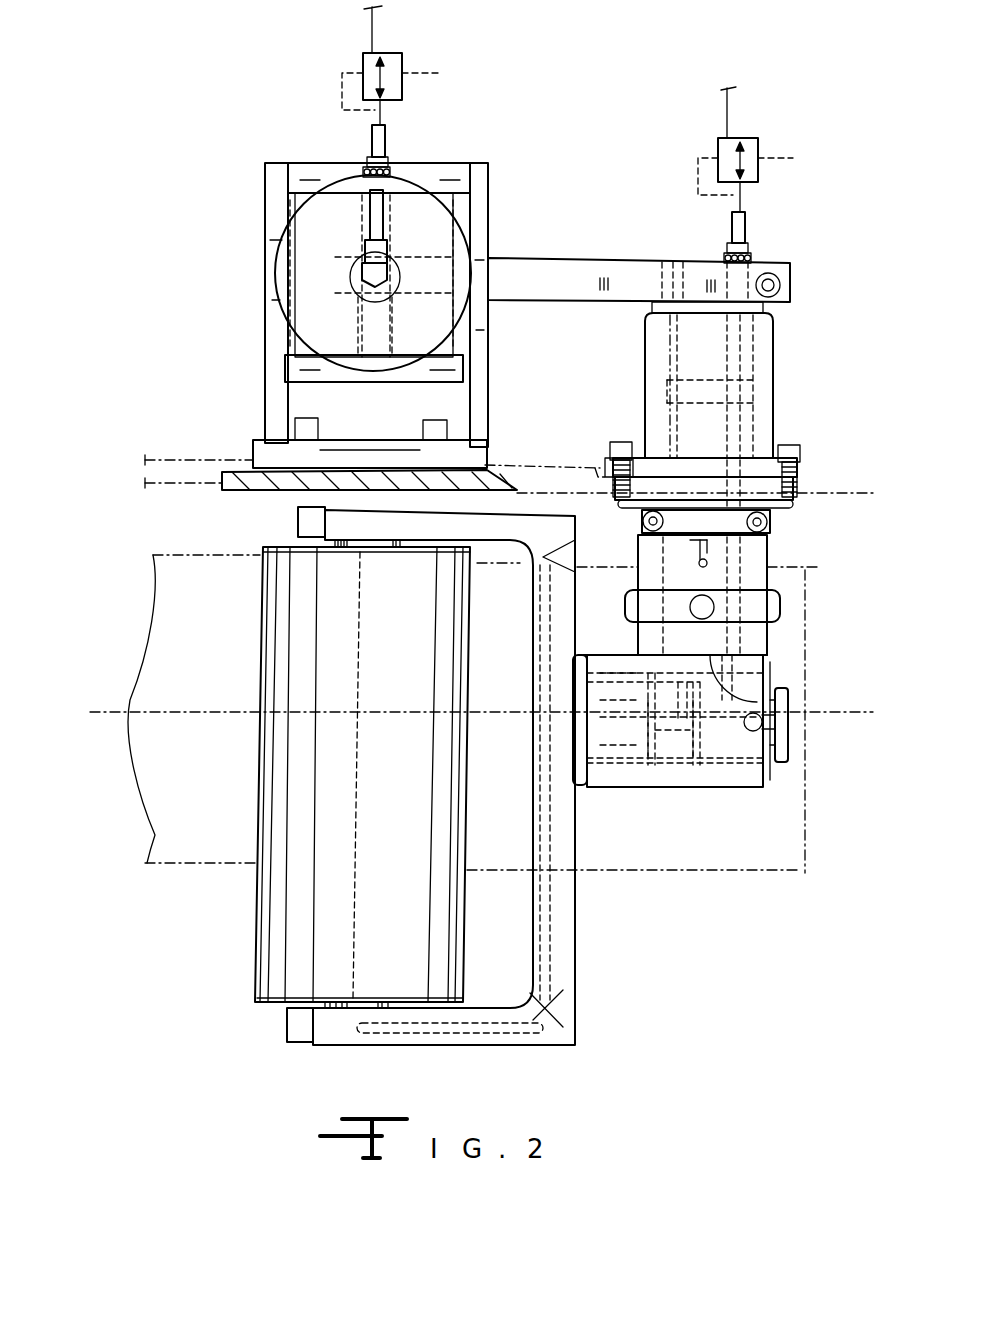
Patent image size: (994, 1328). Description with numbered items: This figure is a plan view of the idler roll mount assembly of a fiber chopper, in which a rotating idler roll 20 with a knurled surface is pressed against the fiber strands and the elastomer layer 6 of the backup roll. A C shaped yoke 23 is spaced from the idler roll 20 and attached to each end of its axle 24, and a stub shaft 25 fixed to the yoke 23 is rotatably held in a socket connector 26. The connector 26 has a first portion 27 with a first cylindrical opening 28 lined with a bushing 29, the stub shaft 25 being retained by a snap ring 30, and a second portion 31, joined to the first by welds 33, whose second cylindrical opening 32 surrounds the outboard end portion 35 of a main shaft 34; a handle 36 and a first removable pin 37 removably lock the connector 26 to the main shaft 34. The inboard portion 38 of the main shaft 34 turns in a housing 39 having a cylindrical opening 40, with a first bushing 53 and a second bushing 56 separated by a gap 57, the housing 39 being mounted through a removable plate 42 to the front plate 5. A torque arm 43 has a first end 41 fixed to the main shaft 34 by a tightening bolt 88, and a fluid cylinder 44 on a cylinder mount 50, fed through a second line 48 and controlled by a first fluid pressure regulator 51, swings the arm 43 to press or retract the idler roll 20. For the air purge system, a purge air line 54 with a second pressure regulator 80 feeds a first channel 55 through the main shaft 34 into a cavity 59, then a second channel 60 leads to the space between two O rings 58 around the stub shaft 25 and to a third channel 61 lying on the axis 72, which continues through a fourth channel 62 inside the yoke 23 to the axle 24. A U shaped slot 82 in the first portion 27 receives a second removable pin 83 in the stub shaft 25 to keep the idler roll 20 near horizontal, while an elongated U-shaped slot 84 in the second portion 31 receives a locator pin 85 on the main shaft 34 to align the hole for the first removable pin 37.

The front plate 5 is at (172, 468).
The elastomer layer 6 is at (175, 842).
The idler roll 20 is at (280, 943).
The yoke 23 is at (560, 970).
The axle 24 is at (298, 512).
The stub shaft 25 is at (735, 750).
The socket connector 26 is at (725, 797).
The first portion 27 is at (655, 777).
The first cylindrical opening 28 is at (610, 768).
The bushing 29 is at (703, 767).
The snap ring 30 is at (790, 780).
The second portion 31 is at (753, 635).
The second cylindrical opening 32 is at (740, 572).
The welds 33 is at (637, 653).
The main shaft 34 is at (788, 702).
The outboard end portion 35 is at (713, 587).
The handle 36 is at (642, 610).
The first removable pin 37 is at (693, 605).
The inboard portion 38 is at (713, 447).
The housing 39 is at (770, 417).
The cylindrical opening 40 is at (755, 358).
The first end 41 is at (373, 218).
The removable plate 42 is at (568, 477).
The torque arm 43 is at (565, 273).
The fluid cylinder 44 is at (310, 278).
The second line 48 is at (385, 143).
The cylinder mount 50 is at (272, 340).
The first fluid pressure regulator 51 is at (402, 57).
The first bushing 53 is at (665, 415).
The purge air line 54 is at (745, 228).
The first channel 55 is at (735, 338).
The second bushing 56 is at (672, 338).
The gap 57 is at (682, 390).
The O rings 58 is at (657, 737).
The cavity 59 is at (670, 673).
The second channel 60 is at (673, 700).
The third channel 61 is at (602, 716).
The fourth channel 62 is at (553, 915).
The axis 72 is at (100, 707).
The second pressure regulator 80 is at (758, 180).
The U shaped slot 82 is at (780, 763).
The second removable pin 83 is at (757, 723).
The elongated U-shaped slot 84 is at (700, 542).
The locator pin 85 is at (747, 557).
The tightening bolt 88 is at (782, 282).